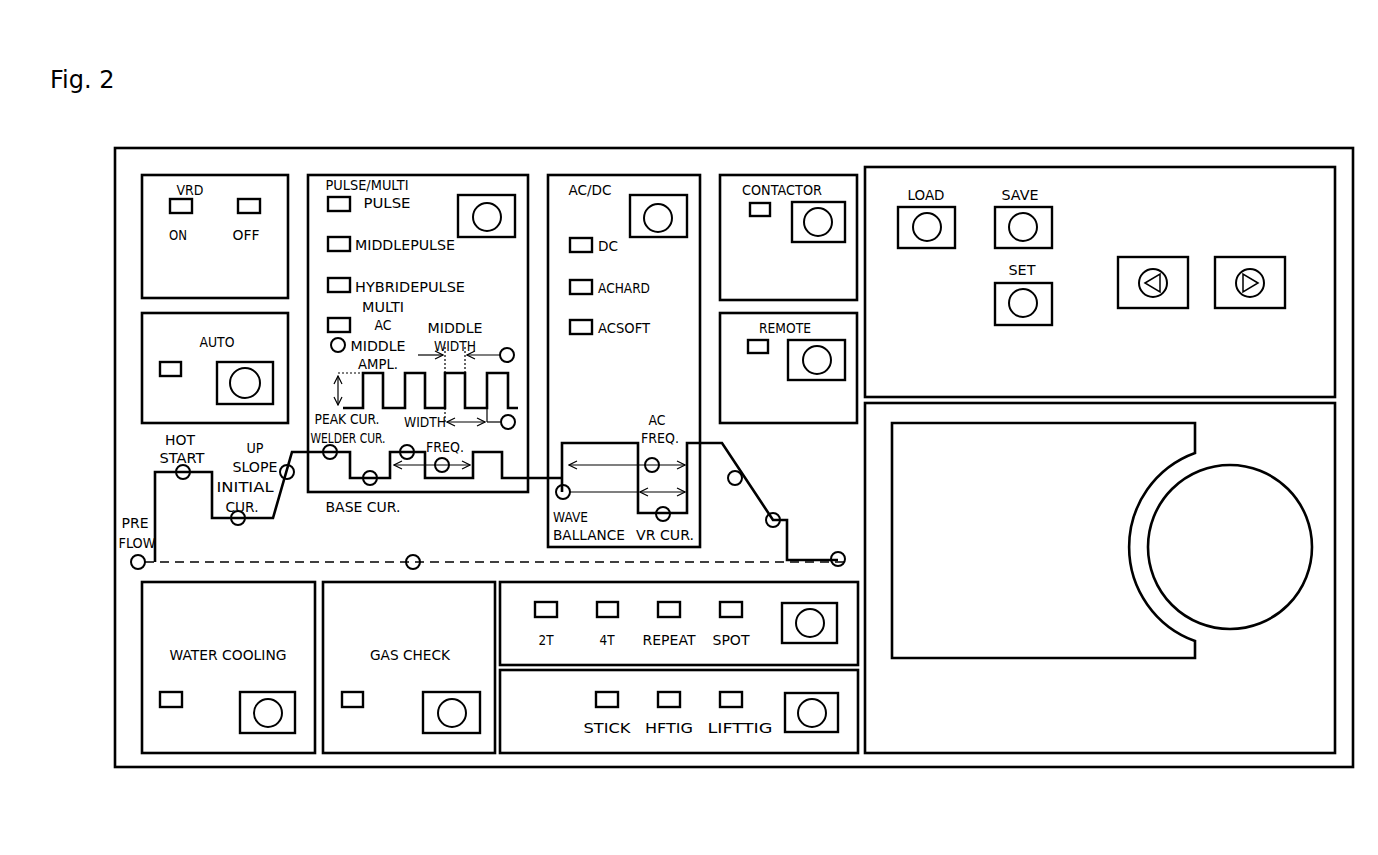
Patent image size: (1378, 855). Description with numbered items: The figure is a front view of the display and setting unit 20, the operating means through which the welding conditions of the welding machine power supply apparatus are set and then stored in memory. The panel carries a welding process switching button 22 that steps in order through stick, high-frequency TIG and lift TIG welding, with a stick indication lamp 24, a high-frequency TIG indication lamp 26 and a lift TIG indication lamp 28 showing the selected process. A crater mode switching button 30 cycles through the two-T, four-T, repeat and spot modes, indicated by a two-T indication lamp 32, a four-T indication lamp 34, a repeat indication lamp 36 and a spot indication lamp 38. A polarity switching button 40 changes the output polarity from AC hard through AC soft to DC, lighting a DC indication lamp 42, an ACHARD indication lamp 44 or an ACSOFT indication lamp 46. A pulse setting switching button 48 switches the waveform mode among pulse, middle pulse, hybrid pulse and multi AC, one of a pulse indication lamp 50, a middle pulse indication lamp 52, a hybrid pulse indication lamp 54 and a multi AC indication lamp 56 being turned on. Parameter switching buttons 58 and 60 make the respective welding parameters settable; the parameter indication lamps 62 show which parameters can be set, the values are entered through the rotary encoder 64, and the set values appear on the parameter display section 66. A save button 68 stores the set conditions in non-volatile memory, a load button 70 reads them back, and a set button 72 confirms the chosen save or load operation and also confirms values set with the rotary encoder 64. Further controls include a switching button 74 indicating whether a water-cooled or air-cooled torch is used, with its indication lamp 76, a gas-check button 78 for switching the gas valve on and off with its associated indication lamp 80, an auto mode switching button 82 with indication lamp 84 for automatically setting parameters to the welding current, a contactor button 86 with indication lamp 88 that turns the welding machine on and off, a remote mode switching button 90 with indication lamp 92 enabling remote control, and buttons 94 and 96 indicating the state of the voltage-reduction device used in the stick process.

The display and setting unit 20 is at (620, 93).
The welding process switching button 22 is at (812, 713).
The stick indication lamp 24 is at (606, 700).
The high-frequency TIG indication lamp 26 is at (665, 700).
The lift TIG indication lamp 28 is at (744, 702).
The crater mode switching button 30 is at (812, 623).
The 2T indication lamp 32 is at (546, 611).
The 4T indication lamp 34 is at (607, 611).
The repeat indication lamp 36 is at (670, 612).
The spot indication lamp 38 is at (733, 612).
The polarity switching button 40 is at (656, 219).
The DC indication lamp 42 is at (575, 240).
The ACHARD indication lamp 44 is at (578, 288).
The ACSOFT indication lamp 46 is at (578, 329).
The pulse setting switching button 48 is at (487, 216).
The pulse indication lamp 50 is at (333, 203).
The middle pulse indication lamp 52 is at (338, 243).
The hybrid pulse indication lamp 54 is at (338, 284).
The multi AC indication lamp 56 is at (338, 325).
The parameter switching button 58 is at (1153, 283).
The parameter switching button 60 is at (1250, 283).
The parameter indication lamp 62 is at (176, 472).
The rotary encoder 64 is at (1242, 595).
The parameter display section 66 is at (1127, 633).
The save button 68 is at (1023, 227).
The load button 70 is at (928, 227).
The set button 72 is at (1023, 303).
The switching button 74 is at (270, 712).
The indication lamp 76 is at (168, 698).
The gas-check button 78 is at (453, 713).
The gas check indicator 80 is at (354, 702).
The auto mode switching button 82 is at (243, 385).
The indication lamp 84 is at (166, 368).
The contactor button 86 is at (819, 221).
The indication lamp 88 is at (759, 208).
The remote mode switching button 90 is at (818, 360).
The indication lamp 92 is at (757, 346).
The button 94 is at (176, 206).
The button 96 is at (247, 205).